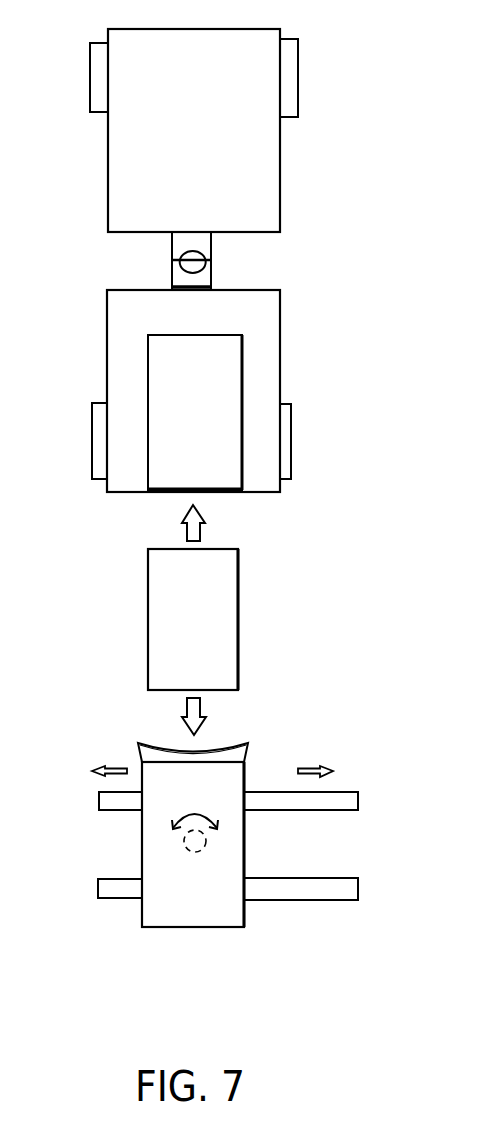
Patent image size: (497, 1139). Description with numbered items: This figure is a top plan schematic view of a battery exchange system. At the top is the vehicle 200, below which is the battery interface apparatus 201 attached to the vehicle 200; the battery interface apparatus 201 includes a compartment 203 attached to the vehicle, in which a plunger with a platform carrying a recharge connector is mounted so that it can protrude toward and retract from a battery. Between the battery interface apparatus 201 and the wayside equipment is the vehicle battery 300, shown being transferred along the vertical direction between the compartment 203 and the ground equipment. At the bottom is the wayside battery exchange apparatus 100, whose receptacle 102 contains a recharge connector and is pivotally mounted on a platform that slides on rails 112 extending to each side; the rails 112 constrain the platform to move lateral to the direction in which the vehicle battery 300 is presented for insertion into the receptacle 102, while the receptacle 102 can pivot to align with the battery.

The battery exchange apparatus 100 is at (258, 927).
The receptacle 102 is at (245, 850).
The rails 112 is at (343, 788).
The upper unit 200 is at (282, 191).
The battery interface apparatus 201 is at (133, 348).
The compartment 203 is at (242, 366).
The vehicle battery 300 is at (238, 633).